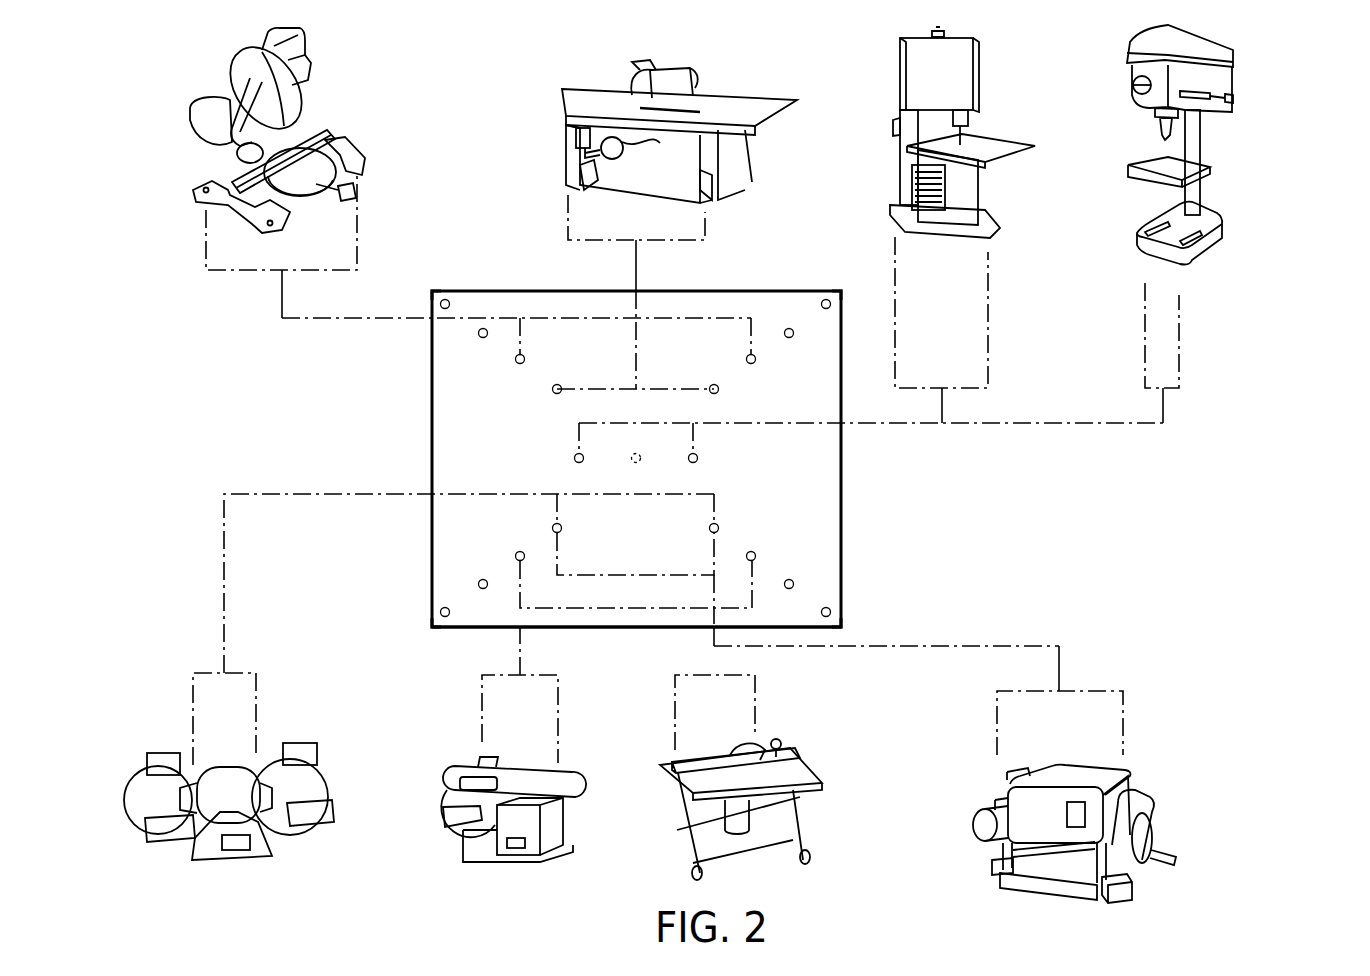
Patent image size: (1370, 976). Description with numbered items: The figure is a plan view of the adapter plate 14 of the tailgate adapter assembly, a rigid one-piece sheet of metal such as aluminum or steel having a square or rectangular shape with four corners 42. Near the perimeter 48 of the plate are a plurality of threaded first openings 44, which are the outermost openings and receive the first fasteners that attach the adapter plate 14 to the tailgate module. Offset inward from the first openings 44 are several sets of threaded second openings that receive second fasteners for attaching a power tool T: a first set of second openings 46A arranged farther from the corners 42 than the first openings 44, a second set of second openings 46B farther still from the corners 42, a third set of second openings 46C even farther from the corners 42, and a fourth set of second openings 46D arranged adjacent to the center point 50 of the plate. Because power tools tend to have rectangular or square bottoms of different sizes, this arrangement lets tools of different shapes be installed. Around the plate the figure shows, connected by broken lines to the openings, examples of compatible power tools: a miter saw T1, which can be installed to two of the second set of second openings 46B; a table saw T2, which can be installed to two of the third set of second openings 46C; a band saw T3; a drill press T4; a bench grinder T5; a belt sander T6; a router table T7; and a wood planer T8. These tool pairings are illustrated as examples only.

The adapter plate 14 is at (880, 508).
The corners 42 is at (432, 291).
The first openings 44 is at (448, 301).
The first set of second openings 46A is at (482, 338).
The second set of second openings 46B is at (524, 357).
The third set of second openings 46C is at (553, 392).
The fourth set of second openings 46D is at (575, 459).
The perimeter 48 is at (432, 400).
The center point 50 is at (640, 462).
The power tool T is at (677, 113).
The miter saw T1 is at (202, 70).
The table saw T2 is at (565, 68).
The band saw T3 is at (1007, 72).
The drill press T4 is at (1262, 85).
The bench grinder T5 is at (125, 752).
The belt sander T6 is at (432, 752).
The router table T7 is at (830, 752).
The wood planer T8 is at (1192, 800).